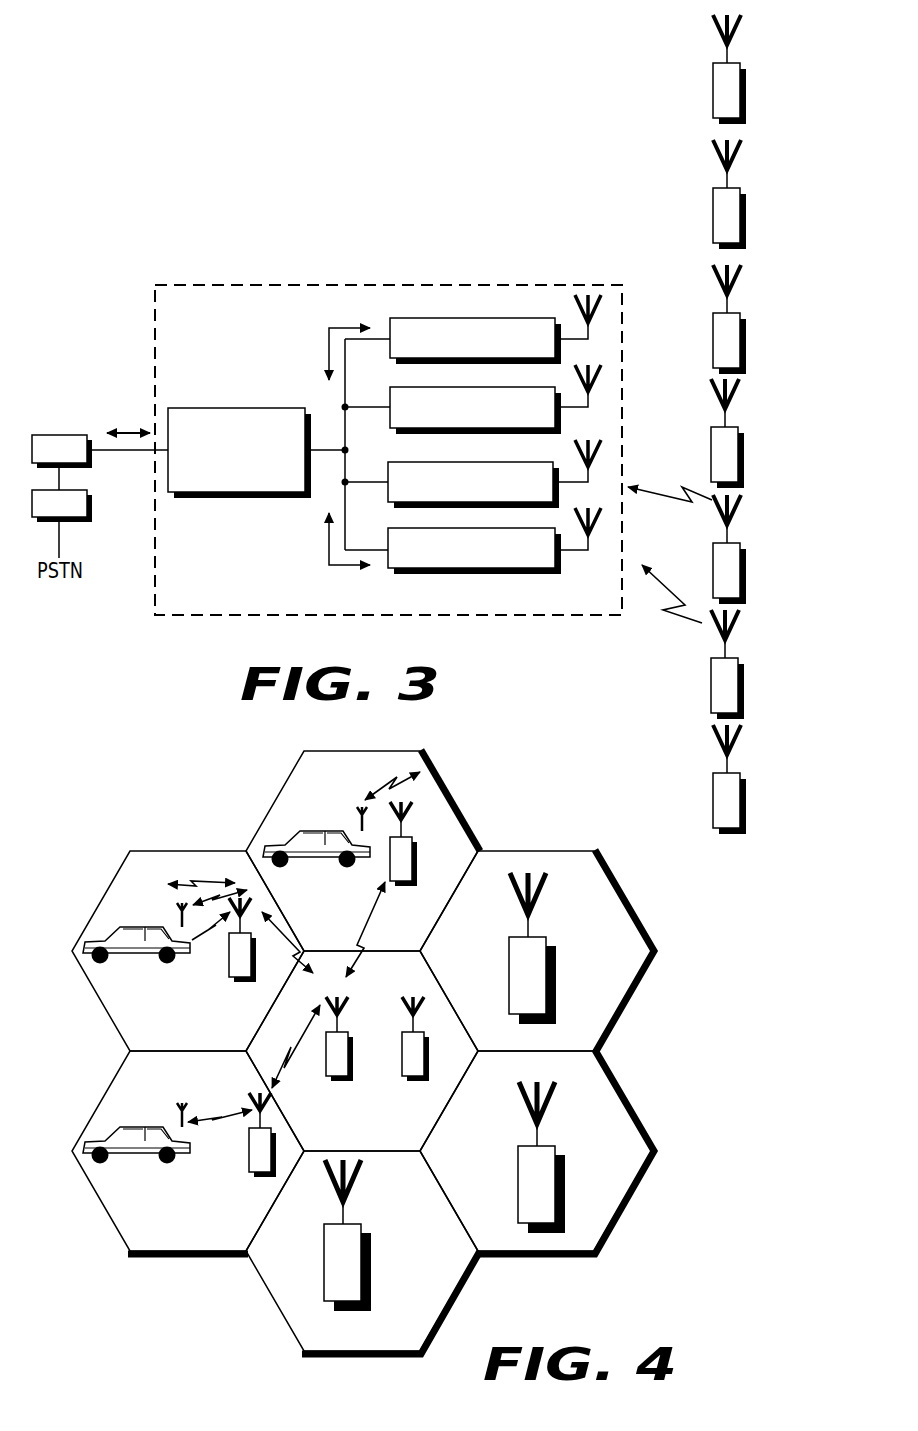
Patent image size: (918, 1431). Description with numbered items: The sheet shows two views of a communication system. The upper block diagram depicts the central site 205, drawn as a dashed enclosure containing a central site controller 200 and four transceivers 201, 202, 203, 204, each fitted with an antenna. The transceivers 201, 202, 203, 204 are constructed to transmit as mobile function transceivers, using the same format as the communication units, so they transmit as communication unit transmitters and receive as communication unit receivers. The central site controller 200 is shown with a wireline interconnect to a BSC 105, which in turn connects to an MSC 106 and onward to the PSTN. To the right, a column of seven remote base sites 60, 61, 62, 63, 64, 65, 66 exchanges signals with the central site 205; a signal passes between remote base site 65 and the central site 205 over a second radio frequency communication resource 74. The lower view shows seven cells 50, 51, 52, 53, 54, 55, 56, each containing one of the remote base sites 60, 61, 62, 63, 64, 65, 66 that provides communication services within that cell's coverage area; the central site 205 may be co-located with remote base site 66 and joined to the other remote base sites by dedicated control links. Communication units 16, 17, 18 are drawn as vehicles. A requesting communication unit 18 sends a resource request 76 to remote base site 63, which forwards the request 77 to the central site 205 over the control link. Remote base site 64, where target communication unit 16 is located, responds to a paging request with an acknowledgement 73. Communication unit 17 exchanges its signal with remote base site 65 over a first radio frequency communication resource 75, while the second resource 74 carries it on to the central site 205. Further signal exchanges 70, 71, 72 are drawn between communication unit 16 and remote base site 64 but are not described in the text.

In FIG. 4, the communication unit 16 is at (135, 958).
In FIG. 4, the communication unit 17 is at (135, 1158).
In FIG. 4, the requesting communication unit 18 is at (313, 858).
In FIG. 4, the cell 50 is at (399, 1342).
In FIG. 4, the cell 51 is at (569, 1241).
In FIG. 4, the cell 52 is at (567, 1042).
In FIG. 4, the cell 53 is at (427, 826).
In FIG. 4, the cell 54 is at (134, 1031).
In FIG. 4, the cell 55 is at (139, 1241).
In FIG. 4, the cell 56 is at (389, 1144).
In FIG. 3, the remote base site 60 is at (745, 73).
In FIG. 4, the remote base site 60 is at (366, 1238).
In FIG. 3, the remote base site 61 is at (745, 198).
In FIG. 4, the remote base site 61 is at (555, 1150).
In FIG. 3, the remote base site 62 is at (745, 323).
In FIG. 4, the remote base site 62 is at (548, 945).
In FIG. 3, the remote base site 63 is at (743, 437).
In FIG. 4, the remote base site 63 is at (416, 845).
In FIG. 3, the remote base site 64 is at (745, 553).
In FIG. 4, the remote base site 64 is at (253, 945).
In FIG. 3, the remote base site 65 is at (743, 668).
In FIG. 4, the remote base site 65 is at (248, 1163).
In FIG. 3, the remote base site 66 is at (745, 783).
In FIG. 4, the remote base site 66 is at (426, 1040).
In FIG. 4, the communication link 70 is at (198, 938).
In FIG. 4, the communication link 71 is at (246, 903).
In FIG. 3, the communication link 72 is at (658, 493).
In FIG. 4, the communication link 72 is at (208, 880).
In FIG. 4, the acknowledgement 73 is at (302, 963).
In FIG. 3, the second radio frequency communication resource 74 is at (655, 583).
In FIG. 4, the second radio frequency communication resource 74 is at (288, 1070).
In FIG. 4, the first radio frequency communication resource 75 is at (222, 1117).
In FIG. 4, the resource request 76 is at (386, 786).
In FIG. 4, the request 77 is at (372, 913).
In FIG. 3, the BSC 105 is at (62, 435).
In FIG. 3, the MSC 106 is at (88, 490).
In FIG. 3, the central site controller 200 is at (195, 408).
In FIG. 3, the transceiver 201 is at (432, 318).
In FIG. 3, the transceiver 202 is at (410, 387).
In FIG. 3, the transceiver 203 is at (480, 462).
In FIG. 3, the transceiver 204 is at (427, 574).
In FIG. 3, the central site 205 is at (488, 620).
In FIG. 4, the central site 205 is at (350, 1040).